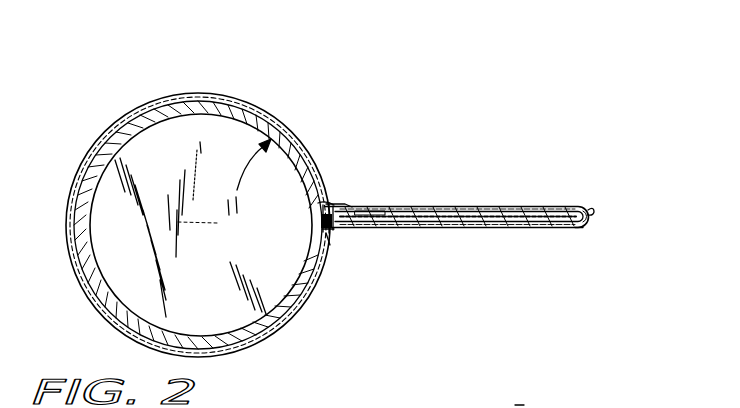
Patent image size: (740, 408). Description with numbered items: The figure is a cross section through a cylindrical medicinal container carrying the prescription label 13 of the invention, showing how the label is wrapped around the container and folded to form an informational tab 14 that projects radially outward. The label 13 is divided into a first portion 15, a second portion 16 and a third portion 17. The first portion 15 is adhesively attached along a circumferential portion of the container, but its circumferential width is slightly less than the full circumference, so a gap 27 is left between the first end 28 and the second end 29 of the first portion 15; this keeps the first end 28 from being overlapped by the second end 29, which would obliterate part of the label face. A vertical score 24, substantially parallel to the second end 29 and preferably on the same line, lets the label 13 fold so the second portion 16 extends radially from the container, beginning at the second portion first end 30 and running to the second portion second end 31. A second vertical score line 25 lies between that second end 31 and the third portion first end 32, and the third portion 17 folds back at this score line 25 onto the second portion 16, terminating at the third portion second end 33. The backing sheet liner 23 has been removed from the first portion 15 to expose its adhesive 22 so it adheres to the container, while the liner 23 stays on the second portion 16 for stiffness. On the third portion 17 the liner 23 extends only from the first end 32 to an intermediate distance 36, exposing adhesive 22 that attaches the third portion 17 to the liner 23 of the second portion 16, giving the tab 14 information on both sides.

The prescription label 13 is at (469, 142).
The informational tab 14 is at (541, 206).
The first portion 15 is at (152, 99).
The second portion 16 is at (457, 228).
The third portion 17 is at (465, 206).
The adhesive 22 is at (258, 342).
The backing sheet liner 23 is at (500, 226).
The vertical score 24 is at (332, 229).
The second vertical score line 25 is at (594, 213).
The gap 27 is at (322, 199).
The first end of first portion 28 is at (323, 200).
The second end of first portion 29 is at (320, 222).
The second portion first end 30 is at (319, 216).
The second portion second end 31 is at (589, 226).
The third portion first end 32 is at (594, 212).
The third portion second end 33 is at (327, 213).
The intermediate distance 36 is at (378, 229).